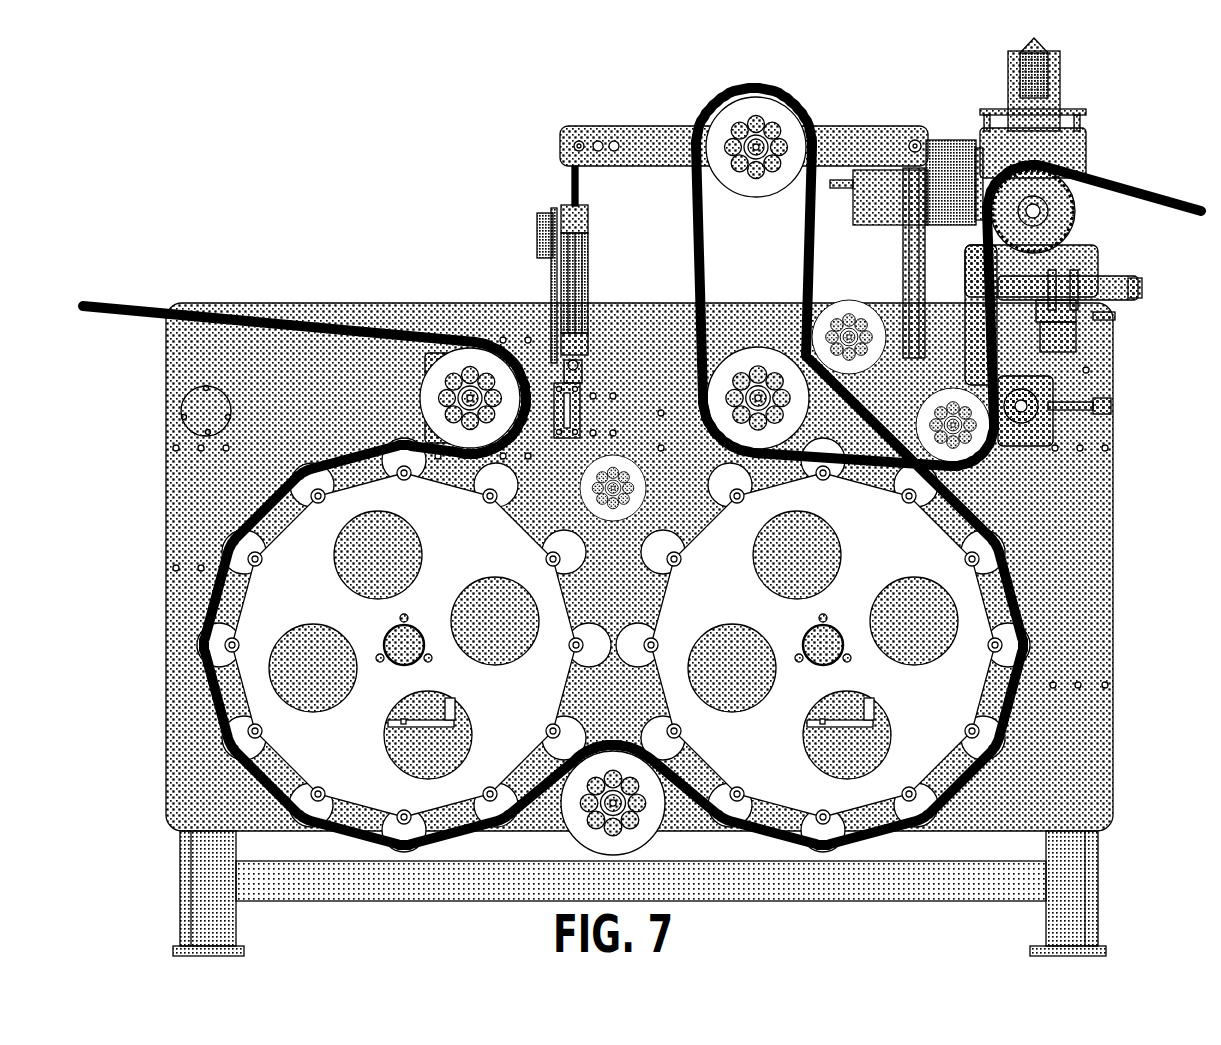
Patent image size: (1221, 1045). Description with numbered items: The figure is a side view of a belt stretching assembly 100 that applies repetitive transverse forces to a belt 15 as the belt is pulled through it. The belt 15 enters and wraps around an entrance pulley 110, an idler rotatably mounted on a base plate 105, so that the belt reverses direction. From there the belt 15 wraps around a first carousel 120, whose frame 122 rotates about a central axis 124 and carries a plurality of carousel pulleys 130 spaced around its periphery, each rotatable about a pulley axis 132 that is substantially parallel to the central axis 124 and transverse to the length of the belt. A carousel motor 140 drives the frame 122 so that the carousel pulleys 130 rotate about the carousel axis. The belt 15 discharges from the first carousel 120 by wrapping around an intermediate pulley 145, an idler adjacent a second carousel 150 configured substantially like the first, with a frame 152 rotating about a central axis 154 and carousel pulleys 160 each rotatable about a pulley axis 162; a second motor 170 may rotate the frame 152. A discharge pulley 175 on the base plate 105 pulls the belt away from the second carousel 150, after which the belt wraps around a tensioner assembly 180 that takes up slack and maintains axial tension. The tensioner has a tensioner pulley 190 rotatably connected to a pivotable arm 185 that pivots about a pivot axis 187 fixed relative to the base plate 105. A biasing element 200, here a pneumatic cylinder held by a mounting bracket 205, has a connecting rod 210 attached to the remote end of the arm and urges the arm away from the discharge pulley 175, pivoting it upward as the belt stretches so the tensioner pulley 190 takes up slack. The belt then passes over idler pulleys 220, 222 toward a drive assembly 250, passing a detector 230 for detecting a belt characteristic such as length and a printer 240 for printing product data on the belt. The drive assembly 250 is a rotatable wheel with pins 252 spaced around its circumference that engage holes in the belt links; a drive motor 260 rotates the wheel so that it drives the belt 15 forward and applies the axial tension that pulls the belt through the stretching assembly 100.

The belt 15 is at (122, 296).
The stretching assembly 100 is at (642, 497).
The base plate 105 is at (292, 376).
The entrance pulley 110 is at (420, 378).
The first carousel 120 is at (397, 641).
The frame 122 is at (462, 518).
The central axis 124 is at (394, 640).
The carousel pulleys 130 is at (238, 530).
The pulley axis 132 is at (252, 556).
The carousel motor 140 is at (408, 692).
The intermediate pulley 145 is at (620, 762).
The second carousel 150 is at (836, 645).
The frame 152 is at (878, 515).
The central axis 154 is at (813, 640).
The carousel pulleys 160 is at (658, 556).
The pulley axis 162 is at (674, 556).
The second motor 170 is at (826, 692).
The discharge pulley 175 is at (712, 392).
The tensioner assembly 180 is at (674, 213).
The pivotable arm 185 is at (650, 128).
The pivot axis 187 is at (904, 134).
The tensioner pulley 190 is at (738, 100).
The biasing element 200 is at (541, 252).
The mounting bracket 205 is at (590, 362).
The connecting rod 210 is at (560, 186).
The idler pulley 220 is at (832, 302).
The idler pulley 222 is at (960, 440).
The detector 230 is at (1036, 400).
The printer 240 is at (1108, 284).
The drive assembly 250 is at (1056, 211).
The pins 252 is at (1064, 215).
The drive motor 260 is at (944, 145).